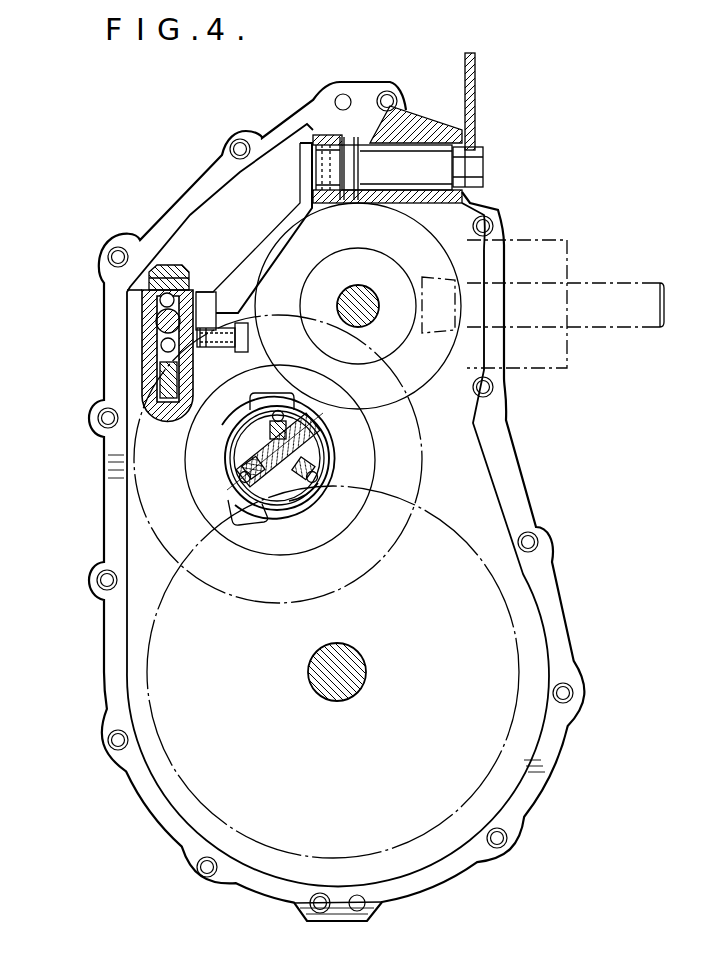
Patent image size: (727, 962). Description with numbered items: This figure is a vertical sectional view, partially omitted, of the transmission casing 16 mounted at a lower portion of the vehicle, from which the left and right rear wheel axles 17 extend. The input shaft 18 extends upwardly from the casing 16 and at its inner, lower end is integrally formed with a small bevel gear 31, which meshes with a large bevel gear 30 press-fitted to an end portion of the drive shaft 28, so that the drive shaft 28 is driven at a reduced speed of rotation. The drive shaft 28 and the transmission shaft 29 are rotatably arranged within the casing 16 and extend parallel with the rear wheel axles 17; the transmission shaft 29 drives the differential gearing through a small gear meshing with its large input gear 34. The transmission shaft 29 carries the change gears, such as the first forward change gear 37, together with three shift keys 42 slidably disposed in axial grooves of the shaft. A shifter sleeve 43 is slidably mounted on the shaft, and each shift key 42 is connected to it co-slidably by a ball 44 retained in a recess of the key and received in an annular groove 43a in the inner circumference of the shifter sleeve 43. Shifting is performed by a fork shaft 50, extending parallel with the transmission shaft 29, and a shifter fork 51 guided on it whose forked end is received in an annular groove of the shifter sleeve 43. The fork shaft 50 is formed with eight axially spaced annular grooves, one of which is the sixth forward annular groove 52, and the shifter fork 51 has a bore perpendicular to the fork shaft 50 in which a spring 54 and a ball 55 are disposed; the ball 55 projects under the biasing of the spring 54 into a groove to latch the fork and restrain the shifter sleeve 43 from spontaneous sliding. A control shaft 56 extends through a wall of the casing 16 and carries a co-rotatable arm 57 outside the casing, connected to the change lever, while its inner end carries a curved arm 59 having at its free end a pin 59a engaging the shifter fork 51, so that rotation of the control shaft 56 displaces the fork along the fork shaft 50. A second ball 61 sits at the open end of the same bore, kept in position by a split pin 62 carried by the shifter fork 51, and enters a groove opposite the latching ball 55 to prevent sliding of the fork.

The transmission casing 16 is at (434, 870).
The rear wheel axle 17 is at (340, 690).
The input shaft 18 is at (605, 300).
The drive shaft 28 is at (358, 288).
The transmission shaft 29 is at (272, 470).
The large bevel gear 30 is at (494, 422).
The small bevel gear 31 is at (438, 302).
The large input gear 34 is at (500, 757).
The change gear 37F1 37 is at (372, 597).
The shift key 42 is at (247, 456).
The shifter sleeve 43 is at (333, 448).
The annular groove 43a is at (311, 499).
The ball 44 is at (330, 490).
The fork shaft 50 is at (194, 290).
The shifter fork 51 is at (150, 368).
The annular groove 52F6 52 is at (143, 314).
The spring 54 is at (188, 365).
The ball 55 is at (157, 343).
The control shaft 56 is at (414, 152).
The arm 57 is at (472, 102).
The curved arm 59 is at (258, 285).
The pin 59a is at (199, 292).
The second ball 61 is at (148, 298).
The split pin 62 is at (172, 272).